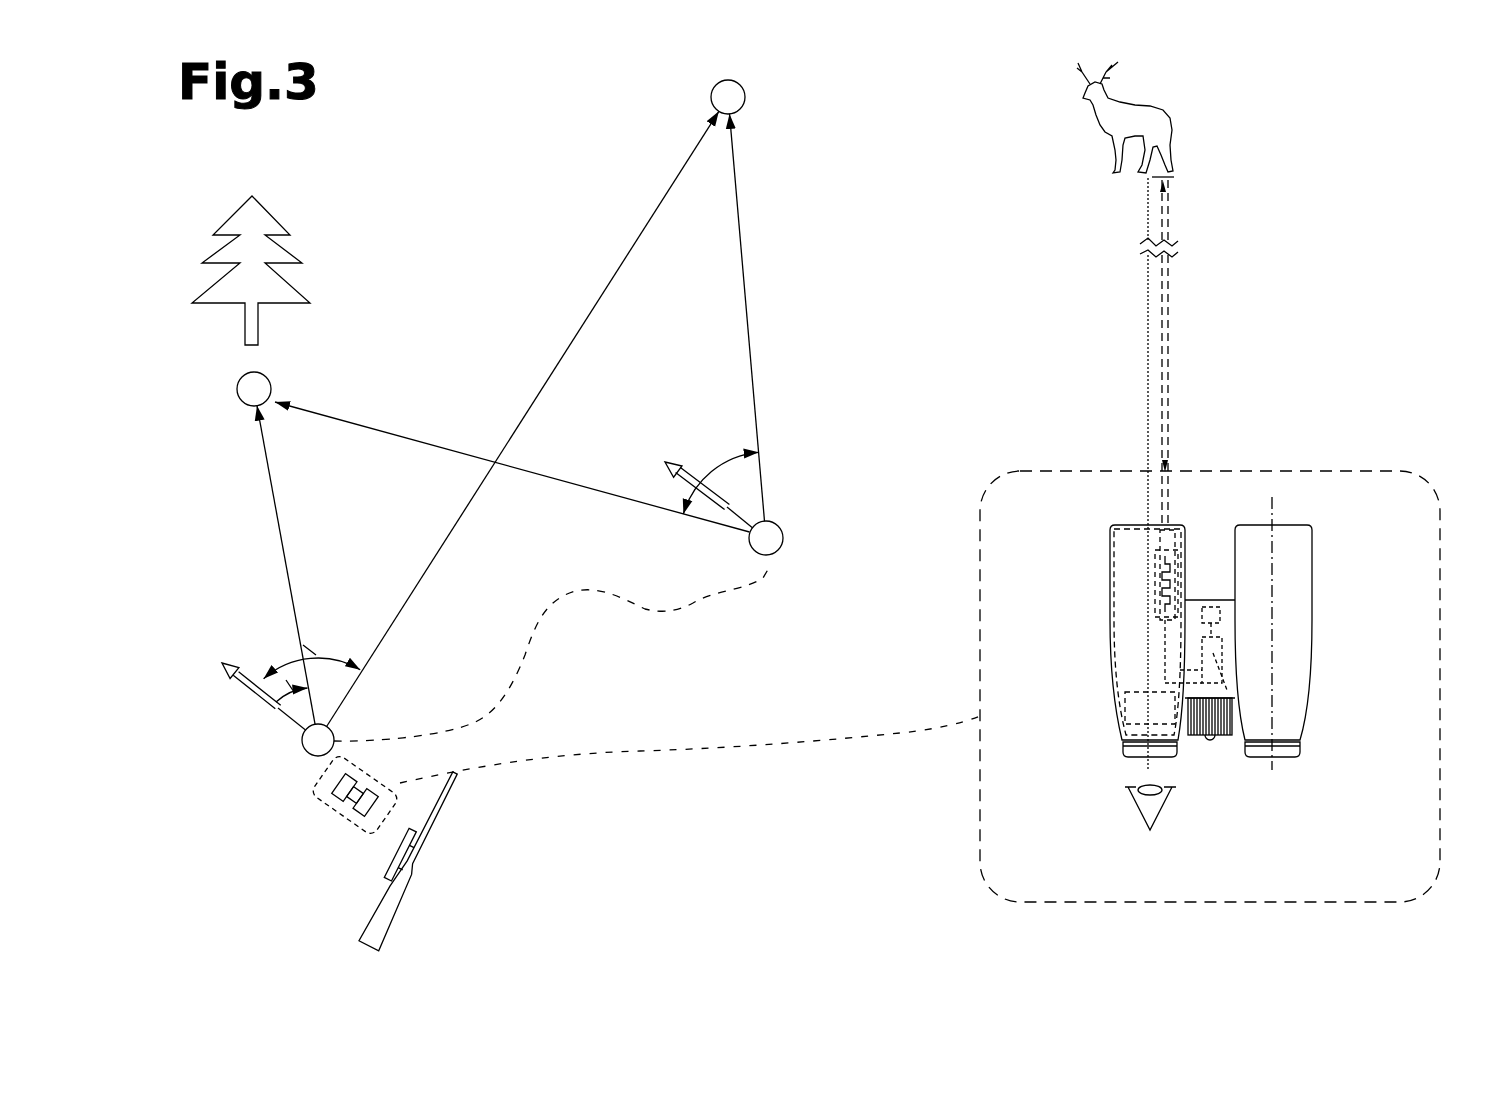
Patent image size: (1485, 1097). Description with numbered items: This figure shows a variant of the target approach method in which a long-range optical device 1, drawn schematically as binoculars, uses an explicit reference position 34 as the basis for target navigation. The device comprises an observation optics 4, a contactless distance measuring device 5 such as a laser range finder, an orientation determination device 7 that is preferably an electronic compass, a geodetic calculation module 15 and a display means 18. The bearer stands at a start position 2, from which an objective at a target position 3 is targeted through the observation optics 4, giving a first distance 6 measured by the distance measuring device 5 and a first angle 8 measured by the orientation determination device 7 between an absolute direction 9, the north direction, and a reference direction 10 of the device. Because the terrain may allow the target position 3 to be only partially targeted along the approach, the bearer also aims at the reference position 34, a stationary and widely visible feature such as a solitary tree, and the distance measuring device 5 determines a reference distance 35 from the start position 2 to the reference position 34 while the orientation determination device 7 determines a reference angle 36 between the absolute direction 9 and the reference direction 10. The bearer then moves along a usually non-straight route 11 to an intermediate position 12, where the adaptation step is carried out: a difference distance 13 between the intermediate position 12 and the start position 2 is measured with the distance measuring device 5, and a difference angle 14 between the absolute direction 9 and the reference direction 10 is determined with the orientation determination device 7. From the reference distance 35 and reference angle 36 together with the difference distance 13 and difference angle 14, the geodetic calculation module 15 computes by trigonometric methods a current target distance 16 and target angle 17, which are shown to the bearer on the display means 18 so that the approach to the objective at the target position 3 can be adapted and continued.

The long-range optical device 1 is at (487, 847).
The start position 2 is at (310, 765).
The target position 3 is at (697, 82).
The observation optics 4 is at (1127, 544).
The distance measuring device 5 is at (1174, 534).
The first distance 6 is at (566, 352).
The orientation determination device 7 is at (1209, 612).
The first angle 8 is at (326, 650).
The absolute direction 9 is at (231, 707).
The reference direction 10 is at (1292, 575).
The route 11 is at (694, 605).
The intermediate position 12 is at (790, 512).
The difference distance 13 is at (366, 425).
The difference angle 14 is at (700, 508).
The geodetic calculation module 15 is at (1223, 740).
The target distance 16 is at (748, 256).
The target angle 17 is at (741, 456).
The display means 18 is at (1113, 713).
The reference position 34 is at (233, 383).
The reference distance 35 is at (278, 540).
The reference angle 36 is at (262, 673).